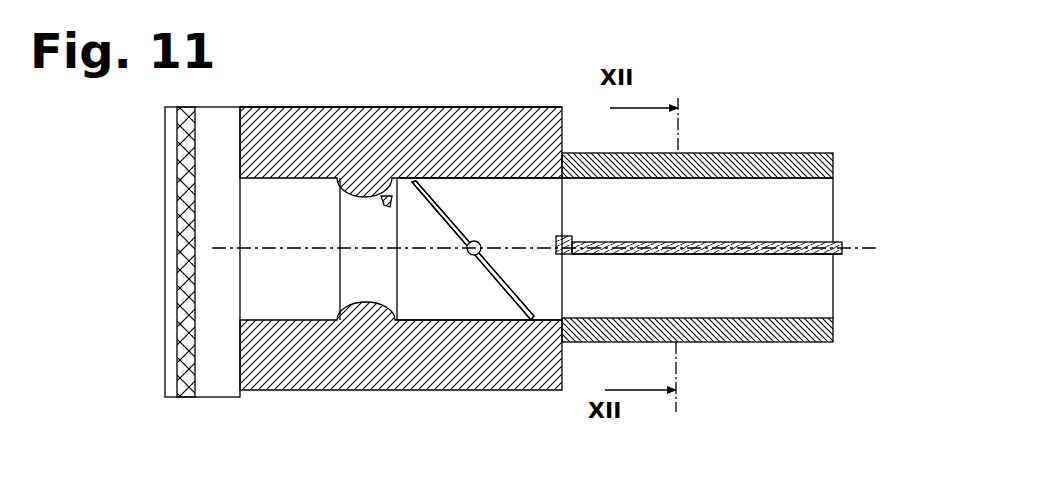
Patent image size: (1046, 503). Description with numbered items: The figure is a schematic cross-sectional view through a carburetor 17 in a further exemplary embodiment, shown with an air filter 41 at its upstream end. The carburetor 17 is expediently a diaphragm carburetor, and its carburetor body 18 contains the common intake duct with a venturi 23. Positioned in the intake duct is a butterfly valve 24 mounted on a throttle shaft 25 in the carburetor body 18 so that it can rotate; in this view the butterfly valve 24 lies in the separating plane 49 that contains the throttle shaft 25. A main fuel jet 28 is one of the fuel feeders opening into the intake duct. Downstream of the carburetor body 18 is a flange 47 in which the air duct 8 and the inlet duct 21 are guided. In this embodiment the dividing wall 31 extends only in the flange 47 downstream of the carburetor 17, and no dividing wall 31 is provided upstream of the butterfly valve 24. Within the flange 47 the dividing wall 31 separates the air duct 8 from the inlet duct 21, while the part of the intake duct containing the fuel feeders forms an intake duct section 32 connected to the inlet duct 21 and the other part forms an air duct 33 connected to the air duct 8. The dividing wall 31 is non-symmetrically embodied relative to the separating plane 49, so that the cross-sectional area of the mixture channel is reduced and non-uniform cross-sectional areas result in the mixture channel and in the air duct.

The carburetor 17 is at (265, 92).
The carburetor body 18 is at (330, 130).
The main fuel jet 28 is at (388, 196).
The throttle shaft 25 is at (478, 242).
The flange 47 is at (731, 155).
The separating plane 49 is at (862, 246).
The inlet duct 21 is at (697, 199).
The air duct 8 is at (699, 265).
The dividing wall 31 is at (746, 254).
The air filter 41 is at (160, 362).
The venturi 23 is at (357, 306).
The butterfly valve 24 is at (508, 302).
The intake duct section 32 is at (479, 201).
The air duct 33 is at (479, 299).